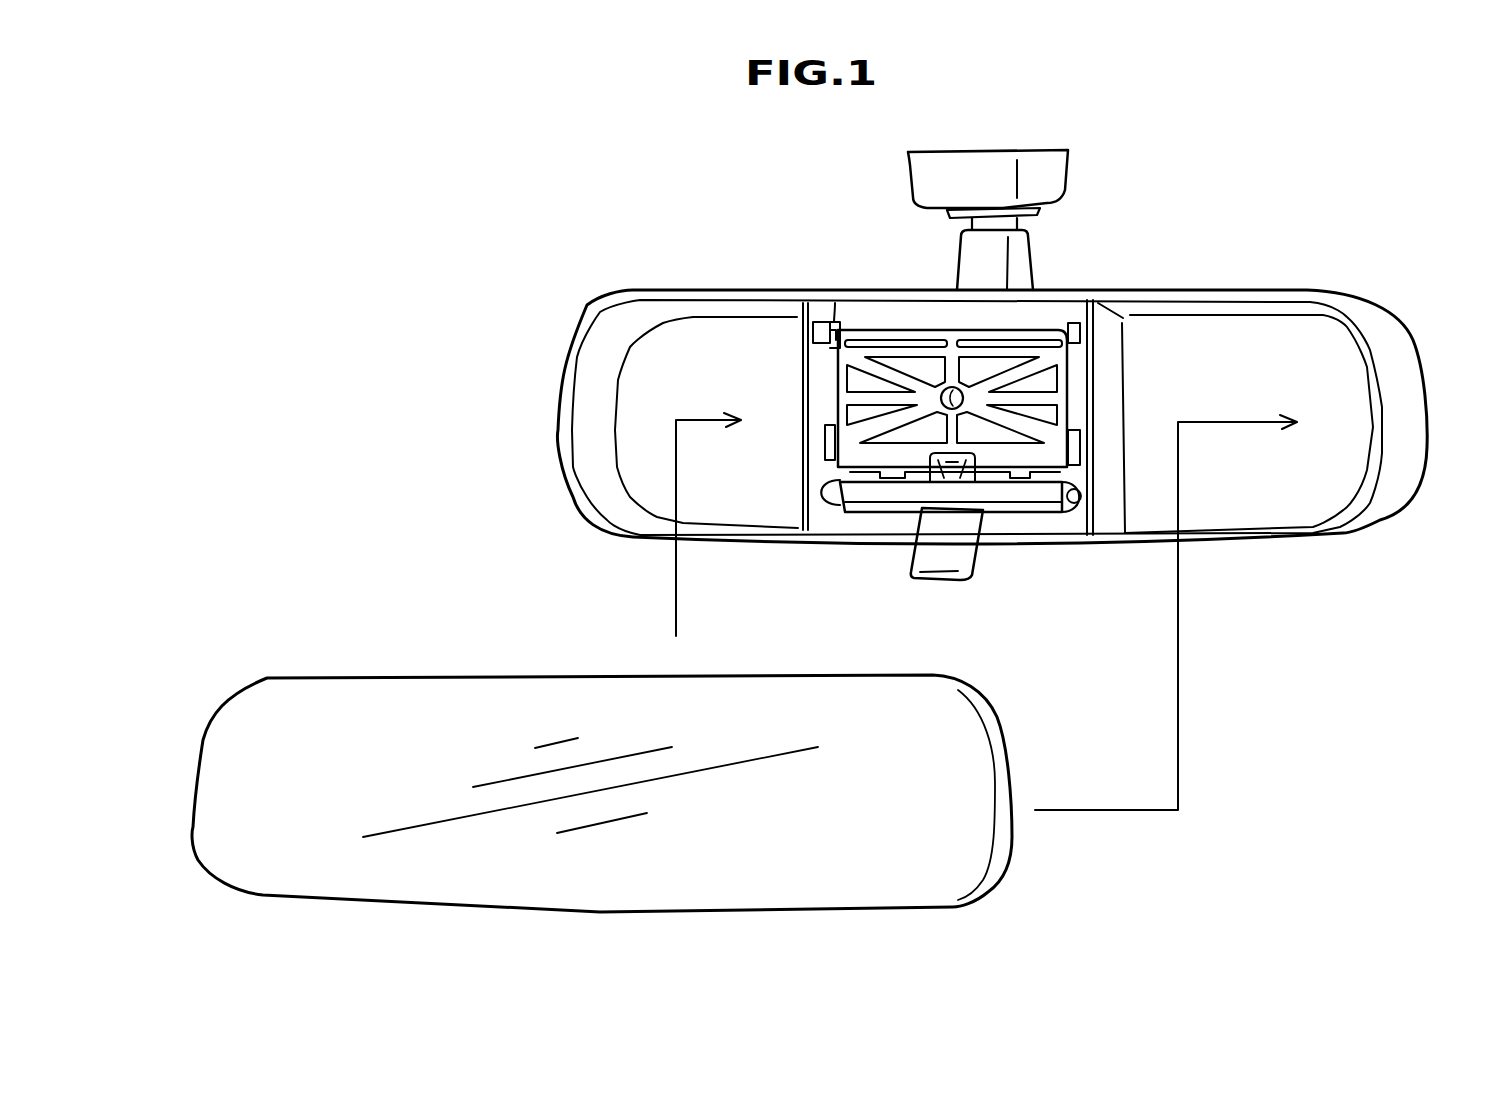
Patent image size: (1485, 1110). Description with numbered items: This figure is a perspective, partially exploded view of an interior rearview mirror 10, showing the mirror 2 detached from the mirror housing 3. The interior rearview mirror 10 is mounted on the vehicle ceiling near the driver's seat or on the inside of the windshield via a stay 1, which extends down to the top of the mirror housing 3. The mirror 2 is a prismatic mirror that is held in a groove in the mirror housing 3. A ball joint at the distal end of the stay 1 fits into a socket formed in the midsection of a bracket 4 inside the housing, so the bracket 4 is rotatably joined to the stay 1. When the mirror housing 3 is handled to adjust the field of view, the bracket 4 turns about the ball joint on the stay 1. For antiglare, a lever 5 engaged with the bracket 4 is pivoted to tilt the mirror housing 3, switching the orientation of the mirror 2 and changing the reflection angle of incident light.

The stay 1 is at (937, 181).
The mirror 2 is at (457, 700).
The mirror housing 3 is at (1380, 330).
The bracket 4 is at (920, 373).
The lever 5 is at (917, 560).
The interior rearview mirror 10 is at (1185, 245).